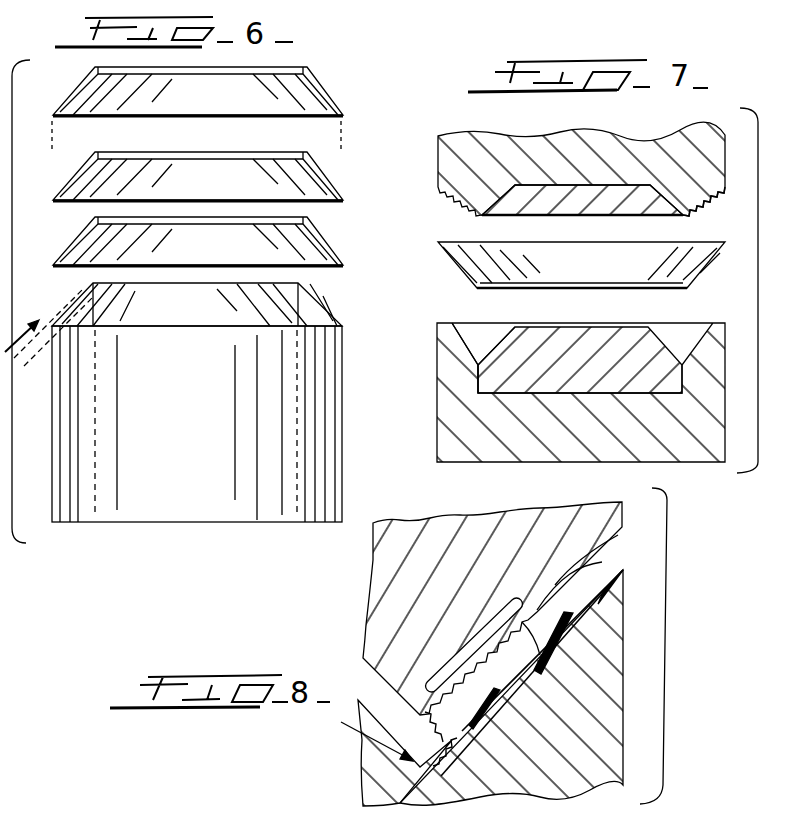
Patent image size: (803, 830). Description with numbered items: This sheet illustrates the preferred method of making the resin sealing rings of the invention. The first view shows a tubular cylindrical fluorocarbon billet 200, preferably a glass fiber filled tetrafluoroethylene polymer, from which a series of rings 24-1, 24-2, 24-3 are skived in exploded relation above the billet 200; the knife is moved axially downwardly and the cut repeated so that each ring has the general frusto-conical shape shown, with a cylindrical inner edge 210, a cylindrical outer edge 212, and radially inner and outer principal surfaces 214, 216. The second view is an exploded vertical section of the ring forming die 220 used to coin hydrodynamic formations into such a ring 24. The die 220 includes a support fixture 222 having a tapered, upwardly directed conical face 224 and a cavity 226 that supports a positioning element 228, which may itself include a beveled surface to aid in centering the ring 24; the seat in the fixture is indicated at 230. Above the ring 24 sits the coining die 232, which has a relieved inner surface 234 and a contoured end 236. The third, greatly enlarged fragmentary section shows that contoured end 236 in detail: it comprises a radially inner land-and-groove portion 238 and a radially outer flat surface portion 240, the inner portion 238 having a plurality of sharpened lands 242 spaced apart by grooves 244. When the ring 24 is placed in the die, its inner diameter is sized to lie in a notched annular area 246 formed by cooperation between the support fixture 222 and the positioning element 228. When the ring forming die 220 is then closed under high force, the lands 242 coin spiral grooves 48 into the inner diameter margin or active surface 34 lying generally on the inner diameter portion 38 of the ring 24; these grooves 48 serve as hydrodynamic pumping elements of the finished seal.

In FIG. 6, the fluorocarbon billet 200 is at (380, 470).
In FIG. 6, the first skived ring 24-1 is at (326, 92).
In FIG. 6, the second skived ring 24-2 is at (326, 176).
In FIG. 6, the third skived ring 24-3 is at (326, 245).
In FIG. 6, the cylindrical inner edge 210 is at (115, 150).
In FIG. 6, the outer principal surface 216 is at (80, 173).
In FIG. 6, the inner principal surface 214 is at (98, 172).
In FIG. 6, the cylindrical outer edge 212 is at (55, 195).
In FIG. 8, the cylindrical outer edge 212 is at (380, 806).
In FIG. 7, the ring forming die 220 is at (766, 146).
In FIG. 7, the coining die 232 is at (632, 172).
In FIG. 7, the relieved inner surface 234 is at (658, 213).
In FIG. 7, the contoured end 236 is at (720, 194).
In FIG. 7, the seal ring 24 is at (591, 274).
In FIG. 8, the seal ring 24 is at (623, 590).
In FIG. 7, the conical face 224 is at (458, 338).
In FIG. 7, the inclined surface 230 is at (497, 343).
In FIG. 7, the positioning element 228 is at (606, 367).
In FIG. 7, the cavity 226 is at (480, 377).
In FIG. 7, the support fixture 222 is at (645, 437).
In FIG. 8, the flat surface portion 240 is at (623, 530).
In FIG. 8, the sharpened lands 242 is at (553, 590).
In FIG. 8, the land-and-groove portion 238 is at (474, 637).
In FIG. 8, the grooves 244 is at (558, 653).
In FIG. 8, the active surface 34 is at (460, 720).
In FIG. 8, the spiral groove 48 is at (505, 709).
In FIG. 8, the inner diameter portion 38 is at (450, 760).
In FIG. 8, the notched annular area 246 is at (353, 734).